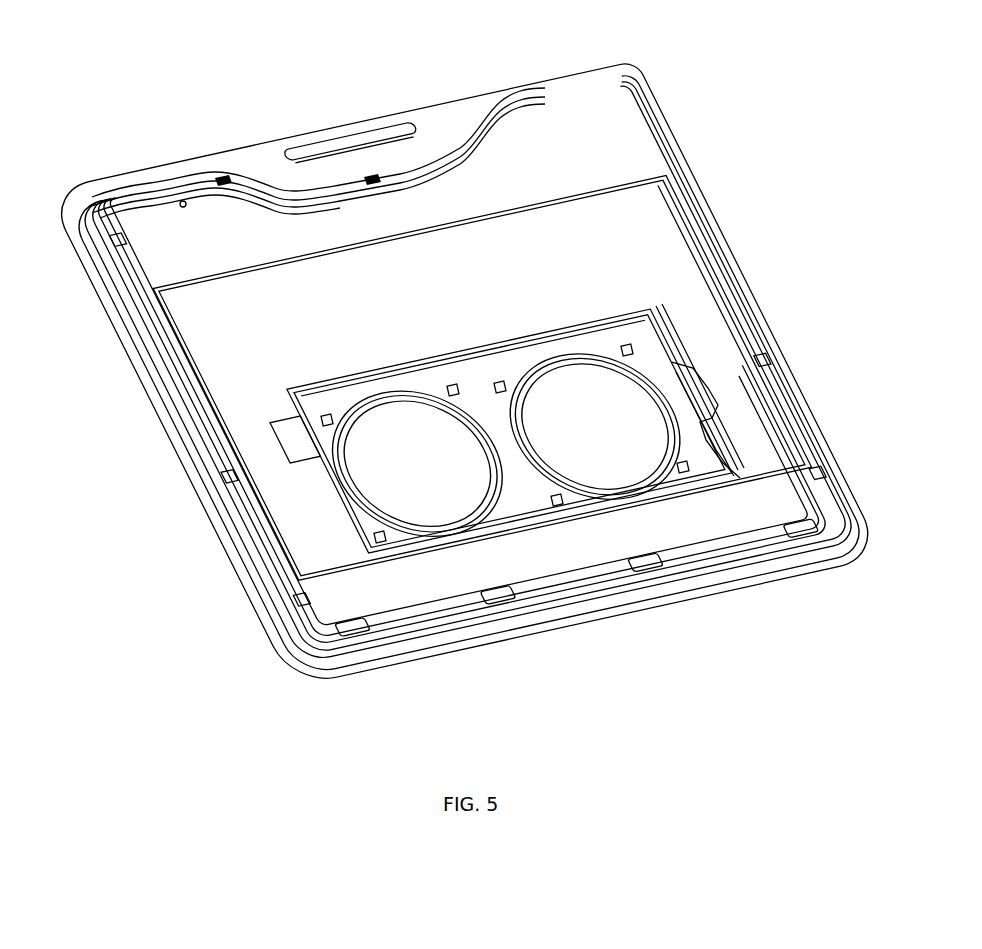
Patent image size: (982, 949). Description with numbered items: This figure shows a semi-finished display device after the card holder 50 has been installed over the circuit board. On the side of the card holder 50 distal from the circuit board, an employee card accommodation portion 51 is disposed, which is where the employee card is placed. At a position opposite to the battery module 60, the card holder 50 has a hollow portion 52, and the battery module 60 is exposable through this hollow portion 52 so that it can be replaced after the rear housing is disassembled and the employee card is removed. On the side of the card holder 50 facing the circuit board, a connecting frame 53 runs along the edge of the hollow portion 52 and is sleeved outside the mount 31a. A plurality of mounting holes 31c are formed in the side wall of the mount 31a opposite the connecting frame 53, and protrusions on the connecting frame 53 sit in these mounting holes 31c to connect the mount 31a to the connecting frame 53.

The card holder 50 is at (592, 158).
The employee card accommodation portion 51 is at (631, 268).
The hollow portion 52 is at (666, 350).
The connecting frame 53 is at (747, 457).
The battery module 60 is at (600, 457).
The mount 31a is at (527, 500).
The mounting holes 31c is at (702, 445).